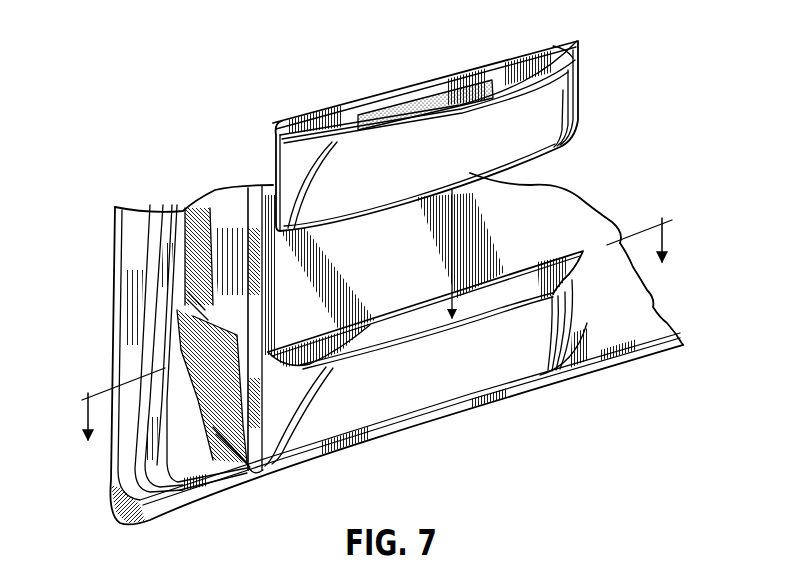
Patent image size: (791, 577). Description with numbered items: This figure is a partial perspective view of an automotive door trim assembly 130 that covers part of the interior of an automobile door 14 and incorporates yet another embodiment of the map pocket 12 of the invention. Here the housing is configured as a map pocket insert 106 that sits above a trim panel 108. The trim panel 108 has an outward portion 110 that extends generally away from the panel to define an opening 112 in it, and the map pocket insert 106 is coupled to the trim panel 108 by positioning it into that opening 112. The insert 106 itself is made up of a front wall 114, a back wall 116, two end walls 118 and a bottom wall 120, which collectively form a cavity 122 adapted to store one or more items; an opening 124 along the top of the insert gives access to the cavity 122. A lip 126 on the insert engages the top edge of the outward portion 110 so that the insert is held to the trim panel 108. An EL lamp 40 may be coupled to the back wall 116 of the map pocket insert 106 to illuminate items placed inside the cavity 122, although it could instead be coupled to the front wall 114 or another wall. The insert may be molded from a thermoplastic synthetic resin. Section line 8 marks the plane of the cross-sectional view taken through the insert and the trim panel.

The section line 8- 8 is at (374, 345).
The map pocket 12 is at (529, 271).
The automobile door 14 is at (240, 221).
The EL lamp 40 is at (424, 103).
The map pocket insert 106 is at (563, 147).
The trim panel 108 is at (652, 312).
The outward portion 110 is at (450, 386).
The opening 112 is at (407, 323).
The front wall 114 is at (453, 167).
The back wall 116 is at (342, 110).
The end walls 118 is at (284, 159).
The bottom wall 120 is at (357, 212).
The cavity 122 is at (498, 75).
The opening 124 is at (582, 56).
The lip 126 is at (470, 108).
The door trim assembly 130 is at (616, 199).